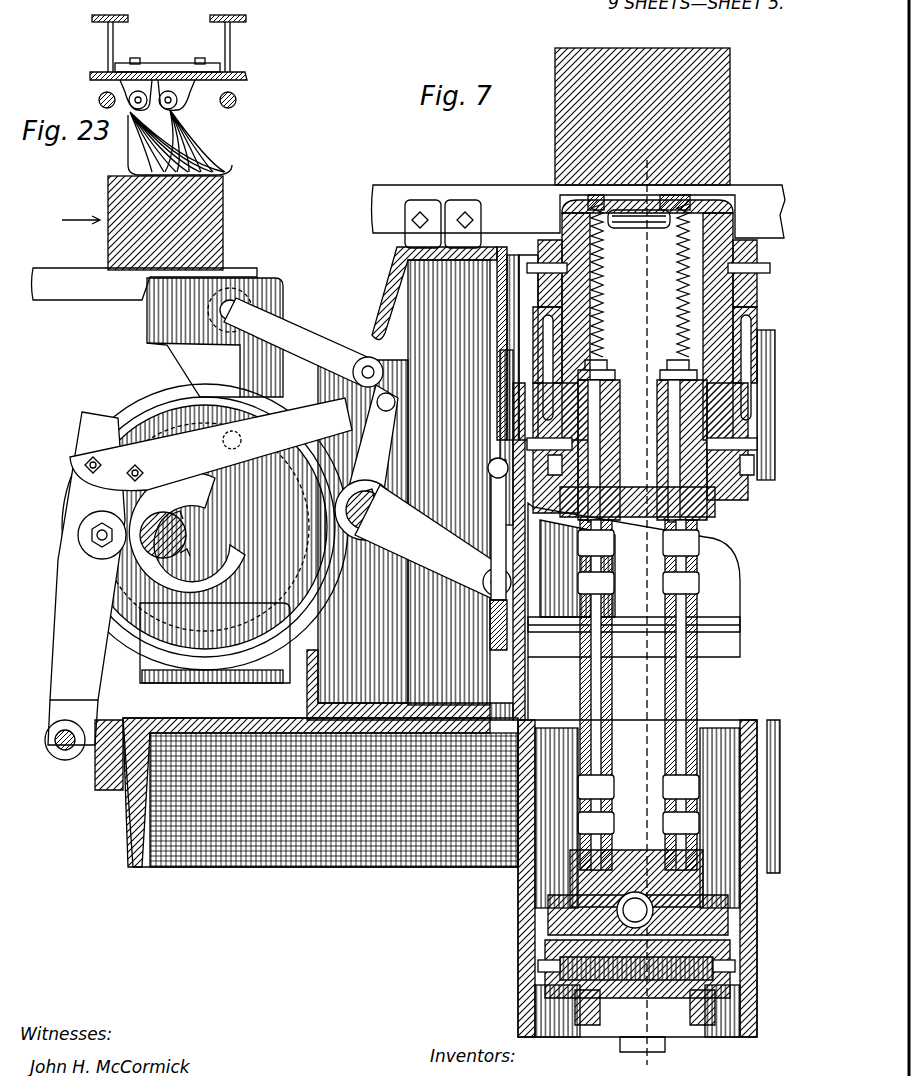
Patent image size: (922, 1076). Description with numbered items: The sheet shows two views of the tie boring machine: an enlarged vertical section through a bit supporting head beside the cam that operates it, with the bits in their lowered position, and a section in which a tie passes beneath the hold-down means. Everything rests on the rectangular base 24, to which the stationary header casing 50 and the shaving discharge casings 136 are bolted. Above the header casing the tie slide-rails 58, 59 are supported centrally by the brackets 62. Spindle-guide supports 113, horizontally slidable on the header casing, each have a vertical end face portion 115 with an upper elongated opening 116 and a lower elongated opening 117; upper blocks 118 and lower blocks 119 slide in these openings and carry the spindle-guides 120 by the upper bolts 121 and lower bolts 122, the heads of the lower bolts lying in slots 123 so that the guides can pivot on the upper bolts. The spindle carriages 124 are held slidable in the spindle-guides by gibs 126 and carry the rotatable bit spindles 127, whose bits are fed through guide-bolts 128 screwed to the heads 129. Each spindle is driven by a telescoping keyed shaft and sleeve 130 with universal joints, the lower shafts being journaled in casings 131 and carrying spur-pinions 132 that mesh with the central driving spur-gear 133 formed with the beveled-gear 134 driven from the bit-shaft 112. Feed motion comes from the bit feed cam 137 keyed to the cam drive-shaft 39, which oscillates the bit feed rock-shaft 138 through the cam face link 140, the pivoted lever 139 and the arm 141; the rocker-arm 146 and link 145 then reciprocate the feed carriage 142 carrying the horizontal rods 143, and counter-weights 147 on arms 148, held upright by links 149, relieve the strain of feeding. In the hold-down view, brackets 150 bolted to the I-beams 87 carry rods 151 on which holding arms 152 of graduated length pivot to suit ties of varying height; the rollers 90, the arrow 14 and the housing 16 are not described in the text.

In FIG. 23, the I-beams 87 is at (210, 24).
In FIG. 23, the brackets 150 is at (170, 82).
In FIG. 23, the rollers 90 is at (246, 98).
In FIG. 23, the rods 151 is at (180, 106).
In FIG. 23, the holding arms 152 is at (228, 160).
In FIG. 23, the tie slide-rail 59 is at (78, 268).
In FIG. 7, the frame block 14 is at (630, 160).
In FIG. 7, the heads of the spindle-guides 129 is at (568, 214).
In FIG. 7, the tie slide-rail 58 is at (373, 190).
In FIG. 7, the brackets 62 is at (438, 214).
In FIG. 7, the housing 16 is at (458, 475).
In FIG. 7, the spindle-guide supports 113 is at (527, 342).
In FIG. 7, the upper blocks 118 is at (545, 262).
In FIG. 7, the guide-bolts 128 is at (640, 194).
In FIG. 7, the gibs 126 is at (639, 227).
In FIG. 7, the upper bolts 121 is at (718, 262).
In FIG. 7, the upper horizontal elongated opening 116 is at (735, 290).
In FIG. 7, the vertical end face portion 115 is at (725, 322).
In FIG. 7, the spindle-guides 120 is at (735, 338).
In FIG. 7, the bit spindles 127 is at (672, 386).
In FIG. 7, the lower horizontal elongated opening 117 is at (712, 412).
In FIG. 7, the lower blocks 119 is at (712, 428).
In FIG. 7, the lower bolts 122 is at (712, 442).
In FIG. 7, the spindle carriages 124 is at (740, 484).
In FIG. 7, the slots 123 is at (700, 488).
In FIG. 7, the feed carriages 142 is at (565, 600).
In FIG. 7, the horizontal rods 143 is at (725, 628).
In FIG. 7, the telescoping keyed shaft and sleeve 130 is at (670, 685).
In FIG. 7, the shaving discharge casings 136 is at (522, 855).
In FIG. 7, the casings 131 is at (560, 890).
In FIG. 7, the bit-shaft 112 is at (616, 912).
In FIG. 7, the spur-pinions 132 is at (560, 968).
In FIG. 7, the beveled-gear 134 is at (567, 1007).
In FIG. 7, the central driving spur-gear 133 is at (682, 1021).
In FIG. 7, the rectangular base 24 is at (300, 855).
In FIG. 7, the stationary header casing 50 is at (300, 680).
In FIG. 7, the bit feed cam 137 is at (165, 408).
In FIG. 7, the arms 148 is at (330, 478).
In FIG. 7, the cam drive-shaft 39 is at (160, 542).
In FIG. 7, the pivoted lever 139 is at (85, 586).
In FIG. 7, the cam face link 140 is at (211, 444).
In FIG. 7, the counter-weights 147 is at (280, 280).
In FIG. 7, the links 149 is at (300, 328).
In FIG. 7, the arm 141 is at (369, 457).
In FIG. 7, the bit feed rock-shaft 138 is at (382, 524).
In FIG. 7, the rocker-arm 146 is at (433, 542).
In FIG. 7, the link 145 is at (502, 554).